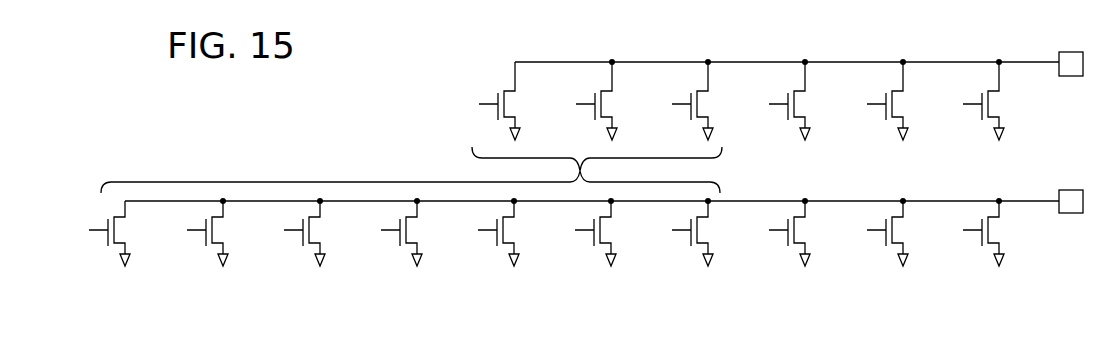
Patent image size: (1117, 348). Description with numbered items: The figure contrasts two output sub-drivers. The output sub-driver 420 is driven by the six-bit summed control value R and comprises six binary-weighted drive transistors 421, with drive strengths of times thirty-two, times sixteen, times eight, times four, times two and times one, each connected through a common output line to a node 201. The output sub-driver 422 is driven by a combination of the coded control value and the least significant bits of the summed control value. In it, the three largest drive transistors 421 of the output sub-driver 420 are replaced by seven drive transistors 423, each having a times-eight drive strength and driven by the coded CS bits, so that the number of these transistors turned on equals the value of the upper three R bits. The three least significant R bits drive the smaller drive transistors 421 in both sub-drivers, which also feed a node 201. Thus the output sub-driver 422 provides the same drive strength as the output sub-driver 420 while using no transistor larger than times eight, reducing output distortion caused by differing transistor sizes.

The output sub-driver 420 is at (404, 108).
The output sub-driver 422 is at (129, 161).
The drive transistor 421 is at (759, 181).
The drive transistor 423 is at (408, 251).
The output node 201 is at (1078, 236).